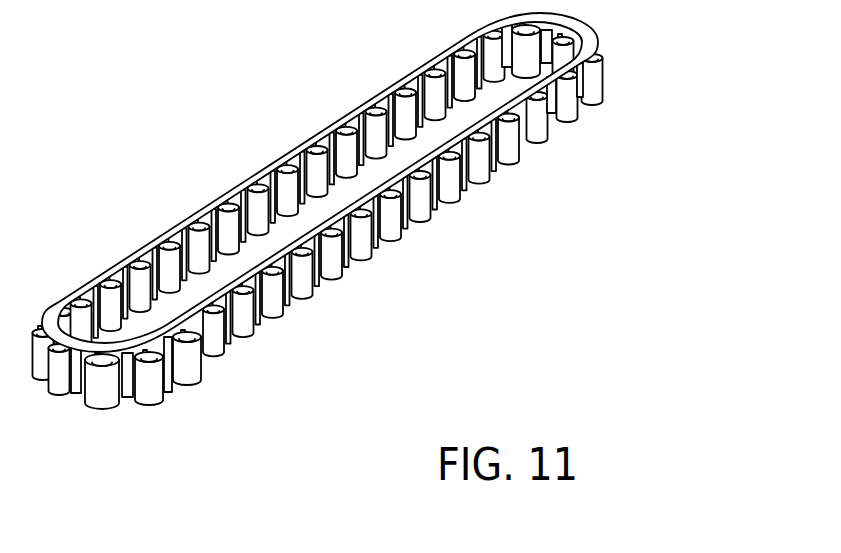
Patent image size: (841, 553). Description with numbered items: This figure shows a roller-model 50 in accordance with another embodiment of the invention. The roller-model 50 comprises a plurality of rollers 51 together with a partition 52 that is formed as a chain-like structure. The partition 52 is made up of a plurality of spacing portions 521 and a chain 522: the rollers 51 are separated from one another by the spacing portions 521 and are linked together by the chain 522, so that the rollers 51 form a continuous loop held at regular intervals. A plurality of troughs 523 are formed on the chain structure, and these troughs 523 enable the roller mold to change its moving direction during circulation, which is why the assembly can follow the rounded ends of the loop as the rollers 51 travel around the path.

The roller-model 50 is at (188, 104).
The rollers 51 is at (393, 220).
The partition 52 is at (298, 146).
The spacing portions 521 is at (186, 378).
The chain 522 is at (168, 236).
The troughs 523 is at (378, 92).